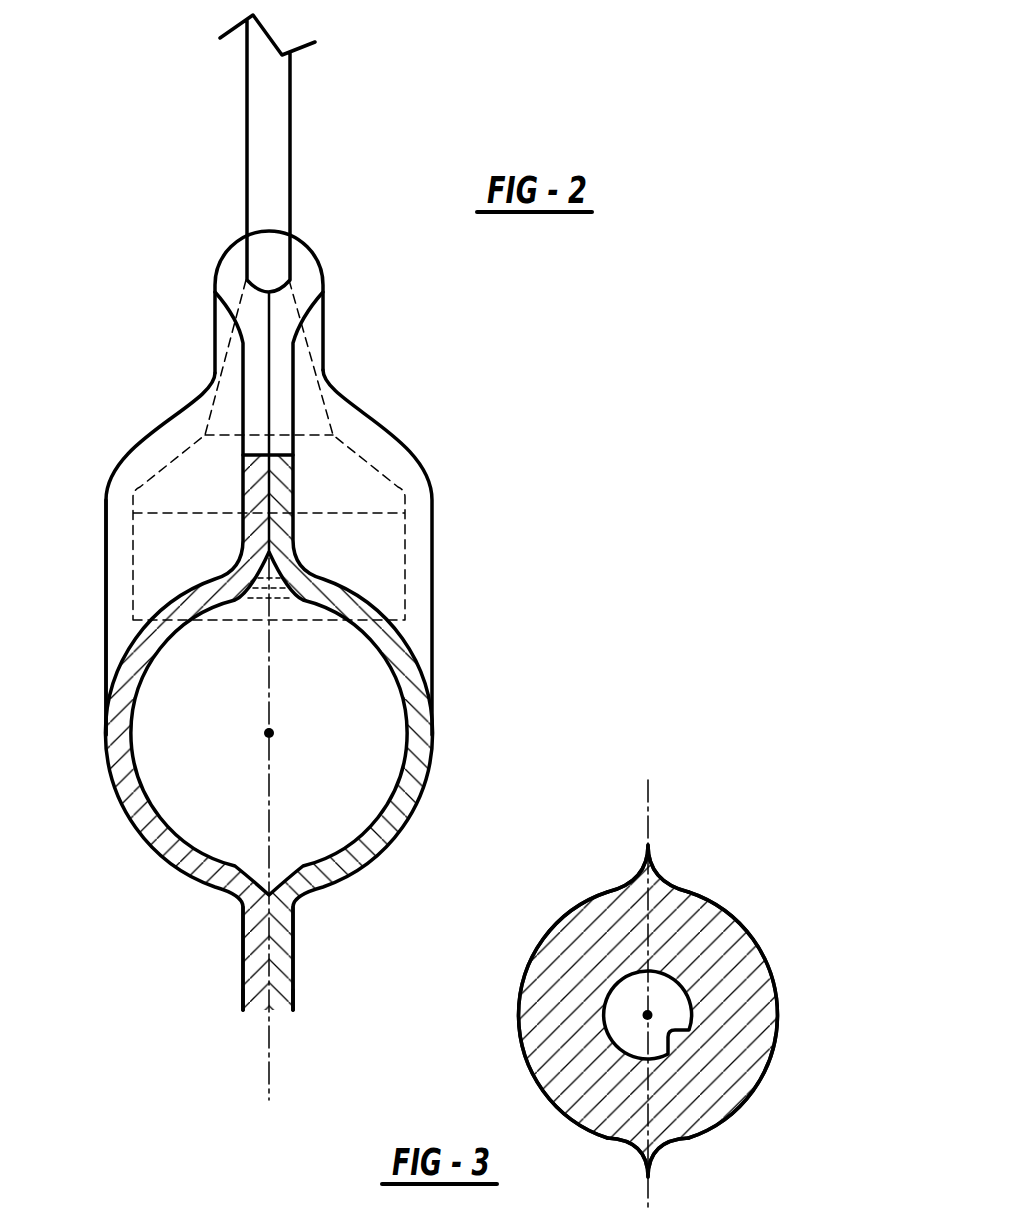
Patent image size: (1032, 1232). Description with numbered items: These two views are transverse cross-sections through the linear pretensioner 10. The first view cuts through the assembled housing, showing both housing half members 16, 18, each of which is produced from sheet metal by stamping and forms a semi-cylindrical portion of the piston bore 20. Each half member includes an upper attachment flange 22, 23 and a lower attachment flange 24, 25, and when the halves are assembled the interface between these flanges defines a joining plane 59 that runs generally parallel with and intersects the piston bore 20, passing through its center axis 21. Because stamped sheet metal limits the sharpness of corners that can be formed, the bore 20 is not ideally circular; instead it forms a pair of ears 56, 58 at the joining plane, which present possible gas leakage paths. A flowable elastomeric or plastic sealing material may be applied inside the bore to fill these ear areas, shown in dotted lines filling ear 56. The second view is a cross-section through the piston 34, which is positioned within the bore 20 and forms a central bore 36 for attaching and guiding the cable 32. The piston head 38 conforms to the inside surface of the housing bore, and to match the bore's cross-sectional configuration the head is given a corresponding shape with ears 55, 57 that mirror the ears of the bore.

In FIG. 2, the linear pretensioner 10 is at (446, 384).
In FIG. 2, the housing half member 16 is at (433, 528).
In FIG. 2, the housing half member 18 is at (105, 532).
In FIG. 2, the piston bore 20 is at (213, 792).
In FIG. 2, the center axis 21 is at (270, 733).
In FIG. 3, the center axis 21 is at (650, 1014).
In FIG. 2, the upper attachment flange 22 is at (306, 310).
In FIG. 2, the upper attachment flange 23 is at (215, 354).
In FIG. 2, the lower attachment flange 24 is at (294, 958).
In FIG. 2, the lower attachment flange 25 is at (243, 962).
In FIG. 2, the cable 32 is at (290, 140).
In FIG. 3, the piston 34 is at (718, 900).
In FIG. 3, the central bore 36 is at (668, 1035).
In FIG. 3, the head 38 is at (772, 1052).
In FIG. 3, the ear 55 is at (637, 873).
In FIG. 2, the ear 56 is at (285, 568).
In FIG. 3, the ear 57 is at (647, 1170).
In FIG. 2, the ear 58 is at (257, 872).
In FIG. 2, the joining plane 59 is at (270, 770).
In FIG. 3, the joining plane 59 is at (648, 801).